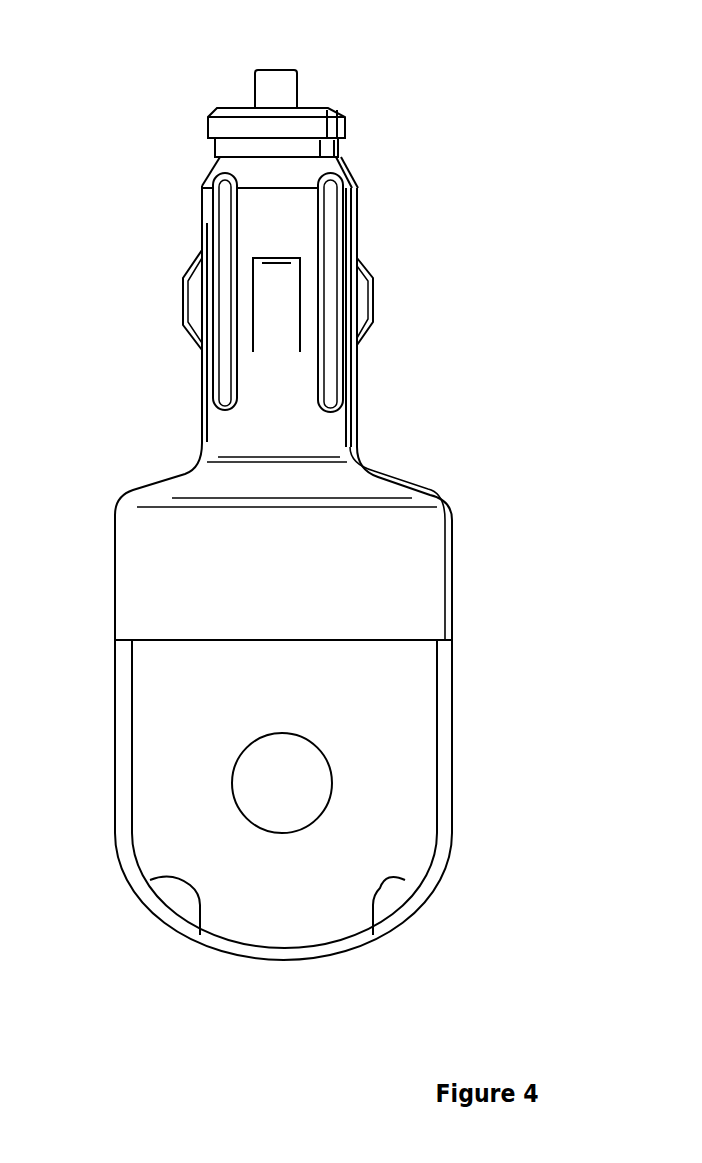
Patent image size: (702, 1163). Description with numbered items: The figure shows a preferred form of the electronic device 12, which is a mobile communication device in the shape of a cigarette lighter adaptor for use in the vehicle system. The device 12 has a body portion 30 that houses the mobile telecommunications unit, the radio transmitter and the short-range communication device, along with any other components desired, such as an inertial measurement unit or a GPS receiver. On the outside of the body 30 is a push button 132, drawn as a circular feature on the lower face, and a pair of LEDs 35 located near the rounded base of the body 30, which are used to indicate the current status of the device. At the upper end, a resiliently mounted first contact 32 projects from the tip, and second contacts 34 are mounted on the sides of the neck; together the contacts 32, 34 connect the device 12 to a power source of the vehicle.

The electronic device 12 is at (311, 491).
The body portion 30 is at (402, 733).
The first contact 32 is at (290, 73).
The second contacts 34 is at (183, 290).
The LEDs 35 is at (403, 900).
The push button 132 is at (263, 788).